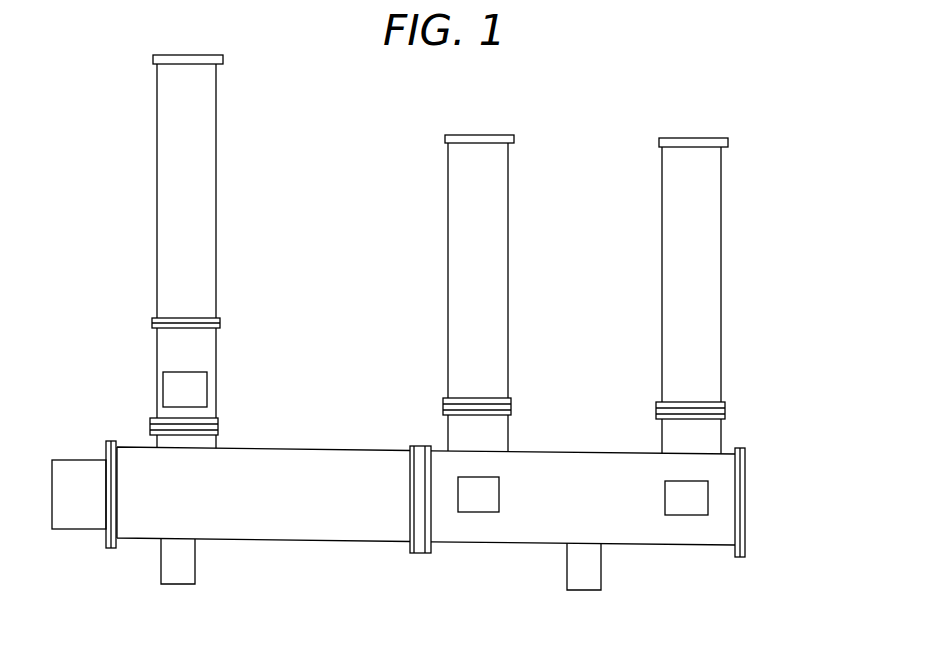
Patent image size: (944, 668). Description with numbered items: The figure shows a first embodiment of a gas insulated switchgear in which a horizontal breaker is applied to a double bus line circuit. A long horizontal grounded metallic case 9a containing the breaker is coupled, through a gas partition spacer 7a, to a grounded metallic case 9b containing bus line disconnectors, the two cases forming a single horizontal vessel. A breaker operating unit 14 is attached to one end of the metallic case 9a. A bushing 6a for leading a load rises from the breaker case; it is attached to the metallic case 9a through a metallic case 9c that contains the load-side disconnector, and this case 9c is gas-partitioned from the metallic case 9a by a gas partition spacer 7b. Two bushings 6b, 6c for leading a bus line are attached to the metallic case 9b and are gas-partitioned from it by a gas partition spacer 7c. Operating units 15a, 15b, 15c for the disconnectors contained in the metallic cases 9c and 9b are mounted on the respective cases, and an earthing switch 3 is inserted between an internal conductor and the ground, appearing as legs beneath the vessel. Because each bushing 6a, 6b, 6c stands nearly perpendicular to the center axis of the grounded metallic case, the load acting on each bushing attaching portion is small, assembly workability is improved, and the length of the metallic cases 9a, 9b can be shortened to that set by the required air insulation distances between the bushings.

The earthing switch 3 is at (177, 587).
The bushing for leading a load 6a is at (216, 250).
The bushing for leading a bus line 6b is at (508, 295).
The bushing for leading a bus line 6c is at (722, 300).
The gas partition spacer 7a is at (415, 555).
The gas partition spacer 7b is at (218, 420).
The gas partition spacer 7c is at (511, 400).
The grounded metallic case 9a is at (287, 543).
The grounded metallic case 9b is at (457, 543).
The metallic case 9c is at (217, 343).
The breaker operating unit 14 is at (75, 517).
The operating unit of disconnector 15a is at (207, 387).
The operating unit of disconnector 15b is at (482, 512).
The operating unit of disconnector 15c is at (687, 515).